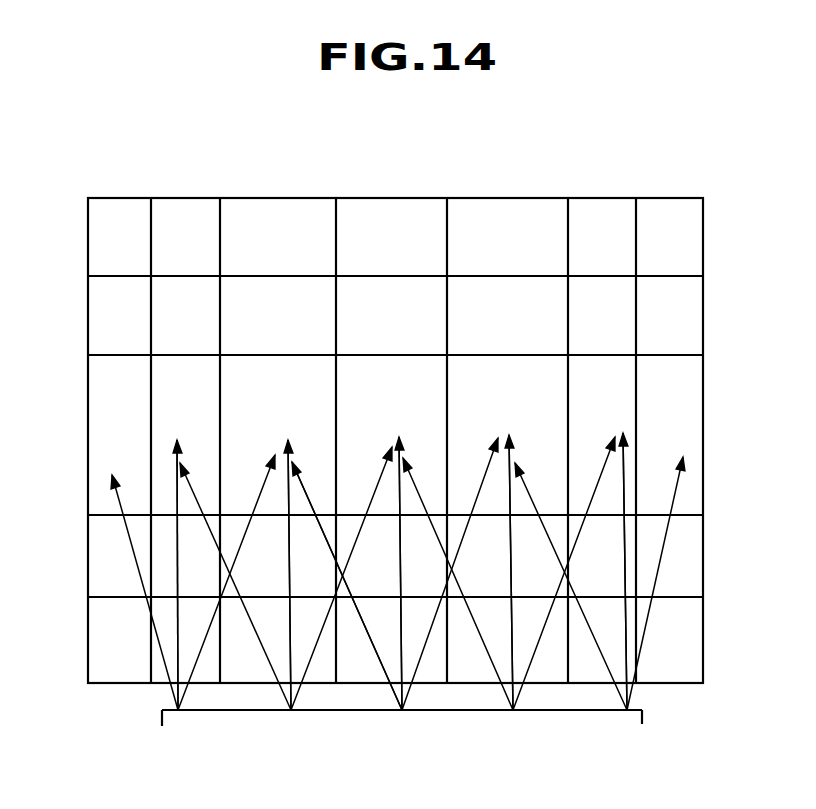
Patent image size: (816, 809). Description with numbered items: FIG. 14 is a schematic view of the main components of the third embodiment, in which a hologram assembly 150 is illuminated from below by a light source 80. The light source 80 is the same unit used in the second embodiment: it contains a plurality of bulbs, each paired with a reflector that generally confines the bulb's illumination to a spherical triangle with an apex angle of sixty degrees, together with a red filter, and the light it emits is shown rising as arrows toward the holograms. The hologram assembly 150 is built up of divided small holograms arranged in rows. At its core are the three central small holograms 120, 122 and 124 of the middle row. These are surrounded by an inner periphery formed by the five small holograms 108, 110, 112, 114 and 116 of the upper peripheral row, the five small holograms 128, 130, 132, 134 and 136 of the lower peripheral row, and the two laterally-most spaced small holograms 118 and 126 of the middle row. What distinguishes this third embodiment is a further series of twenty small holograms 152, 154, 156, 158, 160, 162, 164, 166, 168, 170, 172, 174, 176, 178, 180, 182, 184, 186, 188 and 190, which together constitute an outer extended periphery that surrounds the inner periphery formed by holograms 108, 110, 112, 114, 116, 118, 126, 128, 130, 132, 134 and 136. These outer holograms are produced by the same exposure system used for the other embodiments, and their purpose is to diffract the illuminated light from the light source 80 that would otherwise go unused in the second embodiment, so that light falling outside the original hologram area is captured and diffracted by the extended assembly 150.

The light source 80 is at (645, 703).
The small hologram 108 is at (207, 344).
The small hologram 110 is at (300, 344).
The small hologram 112 is at (415, 344).
The small hologram 114 is at (533, 344).
The small hologram 116 is at (602, 315).
The small hologram 118 is at (207, 428).
The small hologram 120 is at (302, 428).
The small hologram 122 is at (417, 428).
The small hologram 124 is at (535, 428).
The small hologram 126 is at (574, 532).
The small hologram 128 is at (198, 563).
The small hologram 130 is at (282, 582).
The small hologram 132 is at (431, 683).
The small hologram 134 is at (504, 582).
The small hologram 136 is at (602, 556).
The hologram assembly 150 is at (615, 198).
The small hologram 152 is at (142, 267).
The small hologram 154 is at (207, 267).
The small hologram 156 is at (300, 267).
The small hologram 158 is at (415, 267).
The small hologram 160 is at (533, 267).
The small hologram 162 is at (623, 267).
The small hologram 164 is at (690, 267).
The small hologram 166 is at (690, 344).
The small hologram 168 is at (690, 428).
The small hologram 170 is at (700, 582).
The small hologram 172 is at (669, 640).
The small hologram 174 is at (595, 667).
The small hologram 176 is at (547, 667).
The small hologram 178 is at (373, 668).
The small hologram 180 is at (255, 668).
The small hologram 182 is at (210, 668).
The small hologram 184 is at (145, 666).
The small hologram 186 is at (105, 570).
The small hologram 188 is at (145, 428).
The small hologram 190 is at (142, 344).